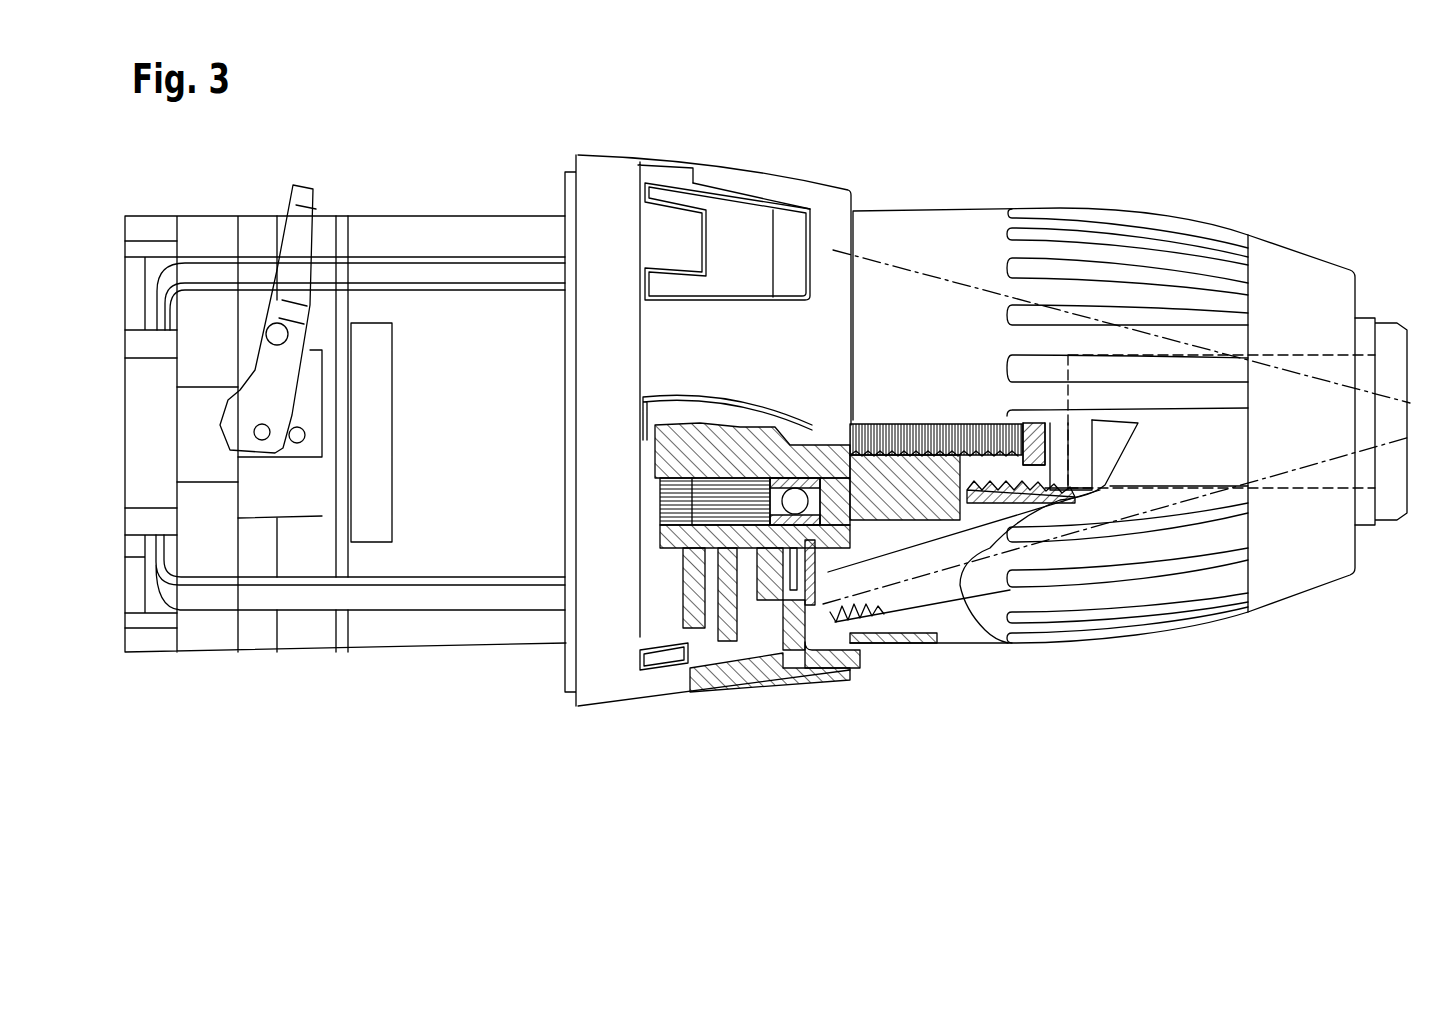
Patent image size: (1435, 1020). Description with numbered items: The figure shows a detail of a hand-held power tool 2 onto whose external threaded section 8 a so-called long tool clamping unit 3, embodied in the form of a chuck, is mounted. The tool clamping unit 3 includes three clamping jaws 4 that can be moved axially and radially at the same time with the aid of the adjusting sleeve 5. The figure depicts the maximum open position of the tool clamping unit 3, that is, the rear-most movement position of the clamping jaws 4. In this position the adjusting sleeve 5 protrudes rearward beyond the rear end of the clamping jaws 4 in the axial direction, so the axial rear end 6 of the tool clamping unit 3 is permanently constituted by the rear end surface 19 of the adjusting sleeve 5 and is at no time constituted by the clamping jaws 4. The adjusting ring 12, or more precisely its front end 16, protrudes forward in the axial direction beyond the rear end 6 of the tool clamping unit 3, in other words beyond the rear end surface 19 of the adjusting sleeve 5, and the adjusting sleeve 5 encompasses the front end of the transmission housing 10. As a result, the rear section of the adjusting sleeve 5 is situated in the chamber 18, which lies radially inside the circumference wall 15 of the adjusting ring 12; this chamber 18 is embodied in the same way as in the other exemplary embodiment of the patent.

The hand-held power tool 2 is at (810, 136).
The tool clamping unit 3 is at (990, 618).
The clamping jaws 4 is at (908, 597).
The adjusting sleeve 5 is at (1043, 218).
The axial rear end 6 is at (810, 680).
The external threaded section 8 is at (983, 478).
The transmission housing 10 is at (682, 540).
The adjusting ring 12 is at (714, 677).
The circumference wall 15 is at (752, 672).
The front end 16 is at (853, 650).
The chamber 18 is at (835, 612).
The rear end surface 19 is at (820, 662).